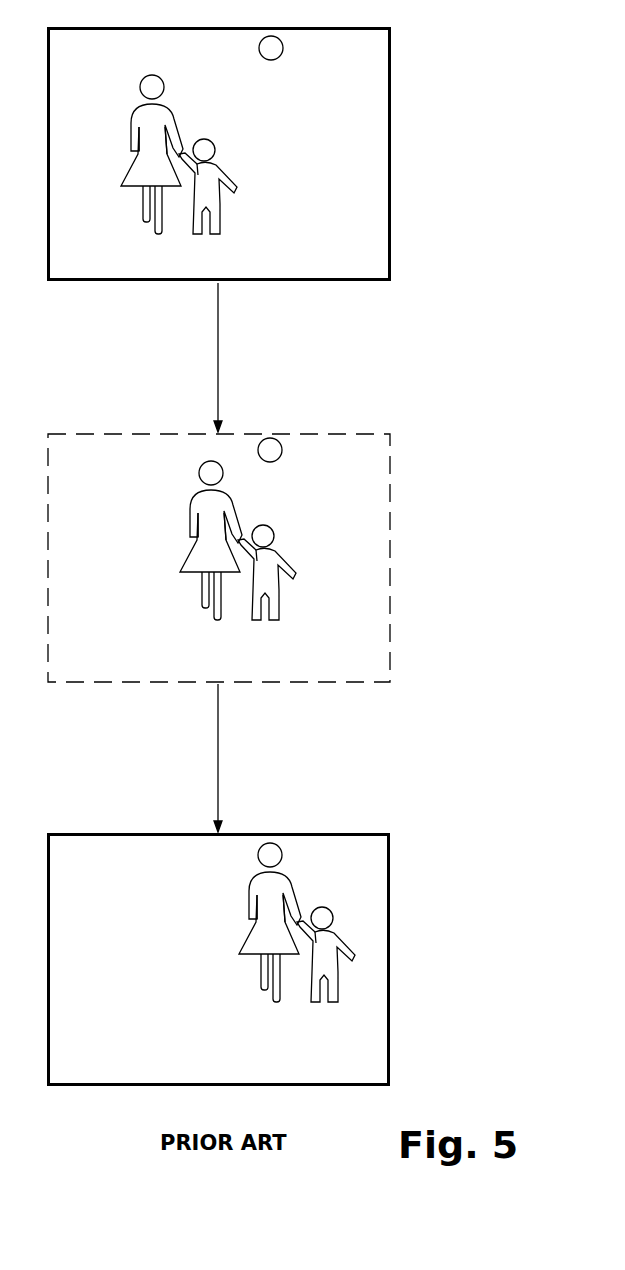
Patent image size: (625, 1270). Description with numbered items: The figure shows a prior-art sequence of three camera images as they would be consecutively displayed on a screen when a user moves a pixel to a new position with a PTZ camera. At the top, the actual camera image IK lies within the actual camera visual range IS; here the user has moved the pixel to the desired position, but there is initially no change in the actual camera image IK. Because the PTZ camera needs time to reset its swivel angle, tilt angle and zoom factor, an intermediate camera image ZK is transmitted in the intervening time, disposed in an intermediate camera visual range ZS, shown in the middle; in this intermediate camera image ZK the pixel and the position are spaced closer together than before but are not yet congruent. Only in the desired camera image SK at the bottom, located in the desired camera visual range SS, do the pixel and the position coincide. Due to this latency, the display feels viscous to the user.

The actual camera visual range IS is at (391, 154).
The actual camera image IK is at (231, 183).
The intermediate camera visual range ZS is at (391, 558).
The intermediate camera image ZK is at (264, 578).
The desired camera visual range SS is at (390, 962).
The desired camera image SK is at (297, 971).